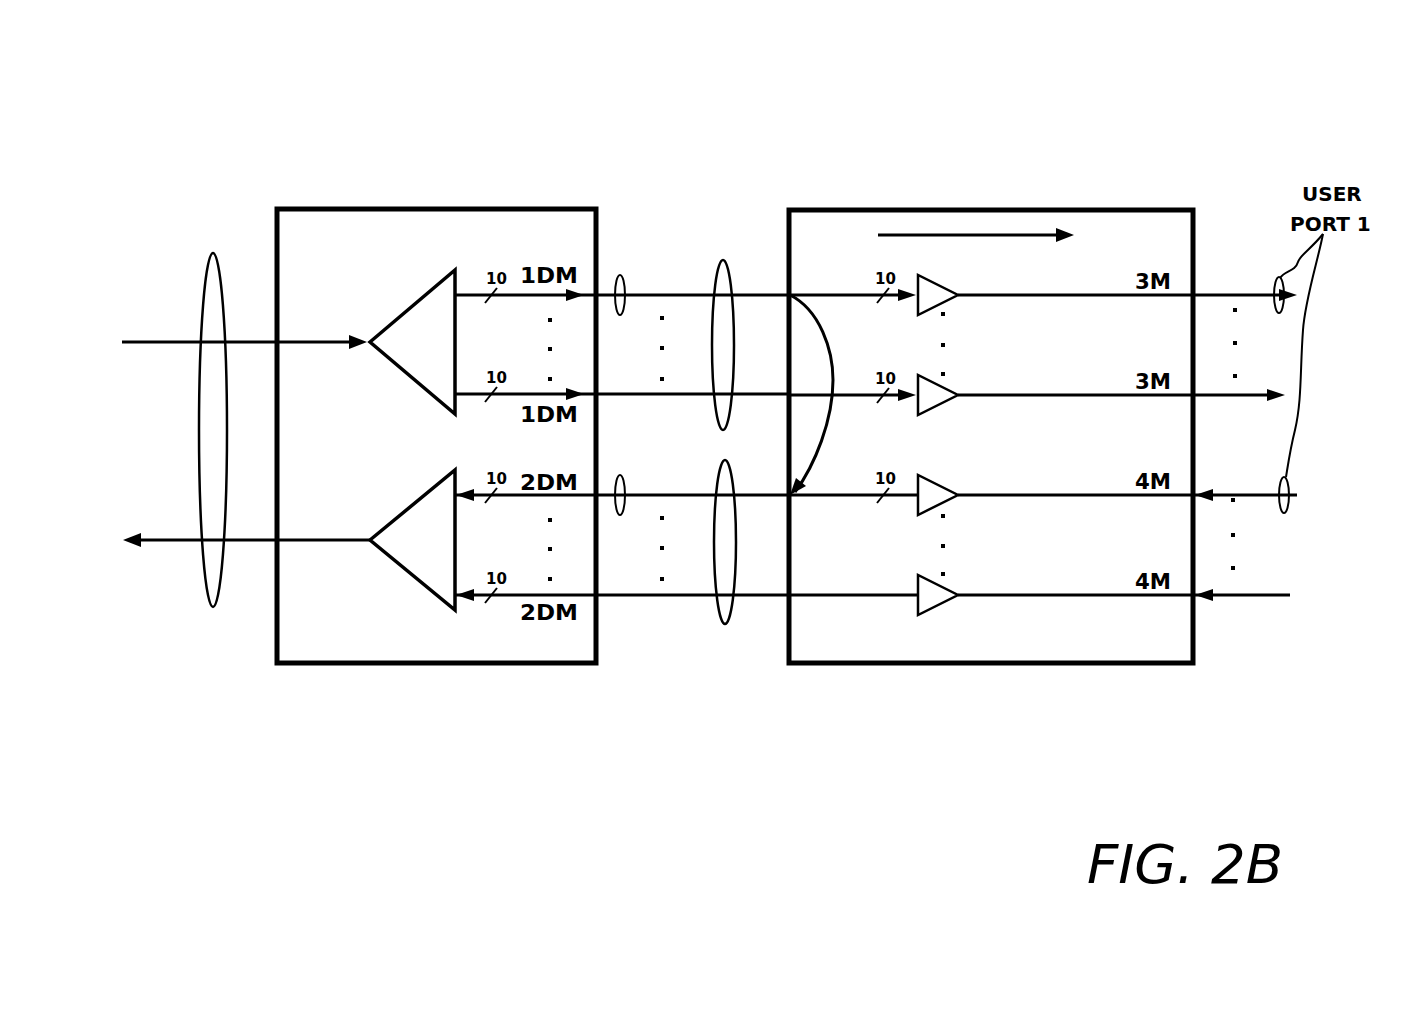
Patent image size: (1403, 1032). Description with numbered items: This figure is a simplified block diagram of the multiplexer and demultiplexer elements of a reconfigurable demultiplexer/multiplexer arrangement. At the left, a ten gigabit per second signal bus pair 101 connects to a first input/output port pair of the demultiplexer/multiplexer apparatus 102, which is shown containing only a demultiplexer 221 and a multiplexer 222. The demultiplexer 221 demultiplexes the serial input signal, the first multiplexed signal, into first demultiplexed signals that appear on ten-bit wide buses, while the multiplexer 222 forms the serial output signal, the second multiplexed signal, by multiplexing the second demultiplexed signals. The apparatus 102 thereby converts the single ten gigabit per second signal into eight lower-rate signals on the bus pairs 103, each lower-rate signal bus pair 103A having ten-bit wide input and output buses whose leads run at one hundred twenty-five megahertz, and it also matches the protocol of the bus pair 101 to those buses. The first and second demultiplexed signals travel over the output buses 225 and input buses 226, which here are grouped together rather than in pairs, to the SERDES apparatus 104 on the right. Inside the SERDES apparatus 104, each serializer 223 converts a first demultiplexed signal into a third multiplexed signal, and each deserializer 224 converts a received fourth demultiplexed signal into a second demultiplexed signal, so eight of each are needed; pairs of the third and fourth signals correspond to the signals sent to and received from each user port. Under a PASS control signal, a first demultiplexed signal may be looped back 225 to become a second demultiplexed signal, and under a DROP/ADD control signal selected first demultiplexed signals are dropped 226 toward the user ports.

The 10 Gb/s signal bus pair 101 is at (213, 607).
The demultiplexer/multiplexer apparatus 102 is at (384, 208).
The bus pairs 103 is at (765, 697).
The 1.25 Gb/s signal bus pair 103A is at (621, 475).
The SERDES apparatus 104 is at (1128, 209).
The demultiplexer 221 is at (410, 313).
The multiplexer 222 is at (410, 511).
The serializer 223 is at (950, 303).
The deserializer 224 is at (920, 513).
The output buses 225 is at (722, 258).
The input buses 226 is at (723, 622).